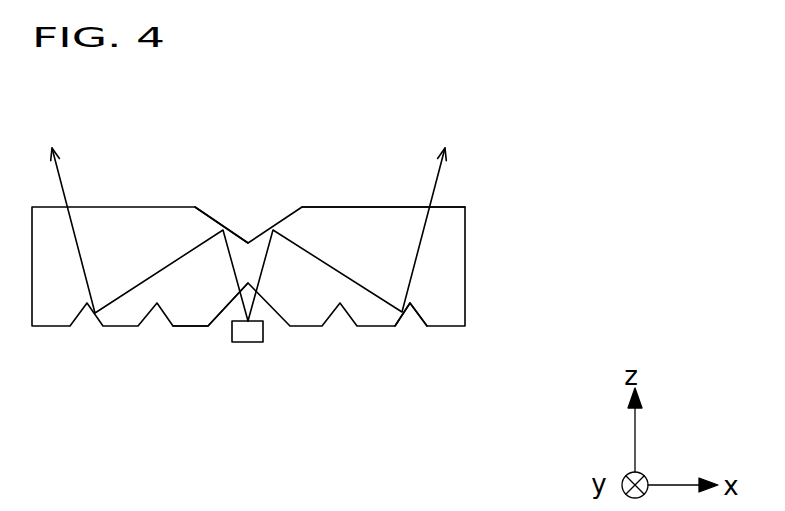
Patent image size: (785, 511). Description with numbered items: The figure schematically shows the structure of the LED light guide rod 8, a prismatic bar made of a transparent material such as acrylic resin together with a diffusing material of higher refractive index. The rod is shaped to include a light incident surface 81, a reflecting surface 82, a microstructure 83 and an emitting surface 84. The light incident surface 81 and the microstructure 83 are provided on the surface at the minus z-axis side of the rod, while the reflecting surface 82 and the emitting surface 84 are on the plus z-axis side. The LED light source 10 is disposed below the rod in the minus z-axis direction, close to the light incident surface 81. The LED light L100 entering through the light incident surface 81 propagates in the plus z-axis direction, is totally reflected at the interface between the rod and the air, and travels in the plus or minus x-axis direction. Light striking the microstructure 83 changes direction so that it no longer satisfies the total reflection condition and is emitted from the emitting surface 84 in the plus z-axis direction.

The LED light guide rod 8 is at (470, 242).
The LED light source 10 is at (245, 335).
The light incident surface 81 is at (222, 323).
The reflecting surface 82 is at (217, 228).
The microstructure 83 is at (413, 317).
The emitting surface 84 is at (378, 206).
The LED light L100 is at (323, 263).